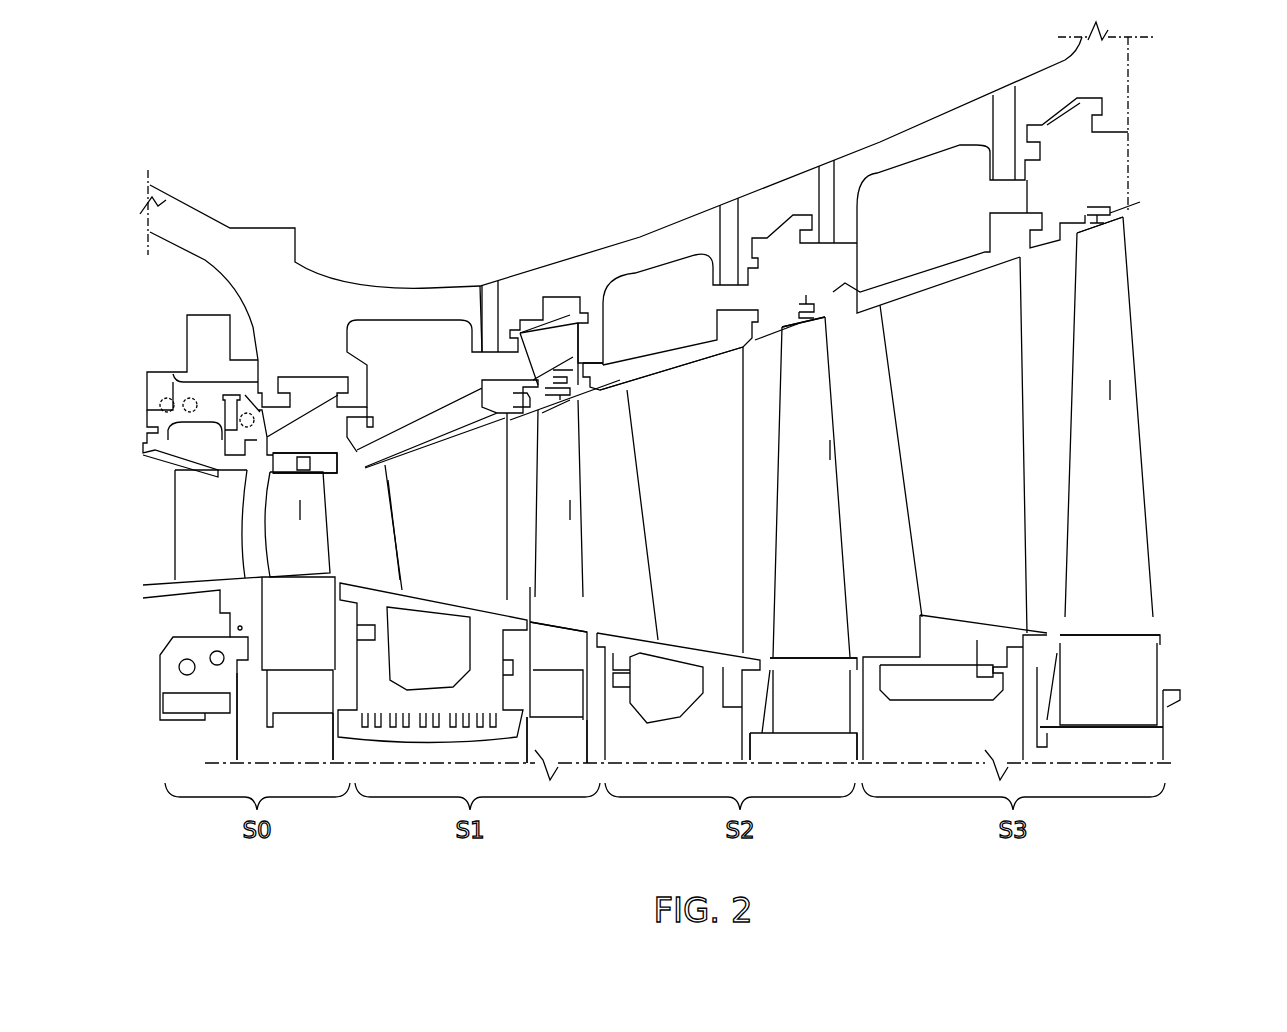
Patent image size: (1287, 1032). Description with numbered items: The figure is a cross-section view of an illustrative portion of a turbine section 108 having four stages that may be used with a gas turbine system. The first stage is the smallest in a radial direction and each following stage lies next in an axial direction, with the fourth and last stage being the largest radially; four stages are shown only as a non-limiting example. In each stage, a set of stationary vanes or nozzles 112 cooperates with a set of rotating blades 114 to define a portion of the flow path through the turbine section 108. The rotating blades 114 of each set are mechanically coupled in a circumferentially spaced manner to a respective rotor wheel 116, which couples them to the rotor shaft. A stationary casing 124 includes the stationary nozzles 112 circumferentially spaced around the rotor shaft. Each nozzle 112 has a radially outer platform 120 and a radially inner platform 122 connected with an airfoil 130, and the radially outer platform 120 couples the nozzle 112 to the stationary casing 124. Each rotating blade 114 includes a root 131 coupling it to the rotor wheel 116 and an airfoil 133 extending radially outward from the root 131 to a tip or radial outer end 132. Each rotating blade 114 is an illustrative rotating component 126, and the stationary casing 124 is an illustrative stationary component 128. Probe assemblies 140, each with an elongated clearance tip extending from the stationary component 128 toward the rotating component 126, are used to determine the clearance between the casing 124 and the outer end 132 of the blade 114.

The turbine section 108 is at (403, 258).
The stationary vane or nozzle 112 is at (225, 536).
The rotating blade 114 is at (285, 541).
The rotor wheel 116 is at (315, 700).
The radially outer platform 120 is at (440, 447).
The radially inner platform 122 is at (483, 607).
The stationary casing 124 is at (680, 322).
The rotating component 126 is at (709, 437).
The stationary component 128 is at (554, 304).
The airfoil 130 is at (455, 535).
The root 131 is at (303, 617).
The tip or radial outer end 132 is at (567, 420).
The airfoil 133 is at (305, 497).
The probe assembly 140 is at (303, 453).